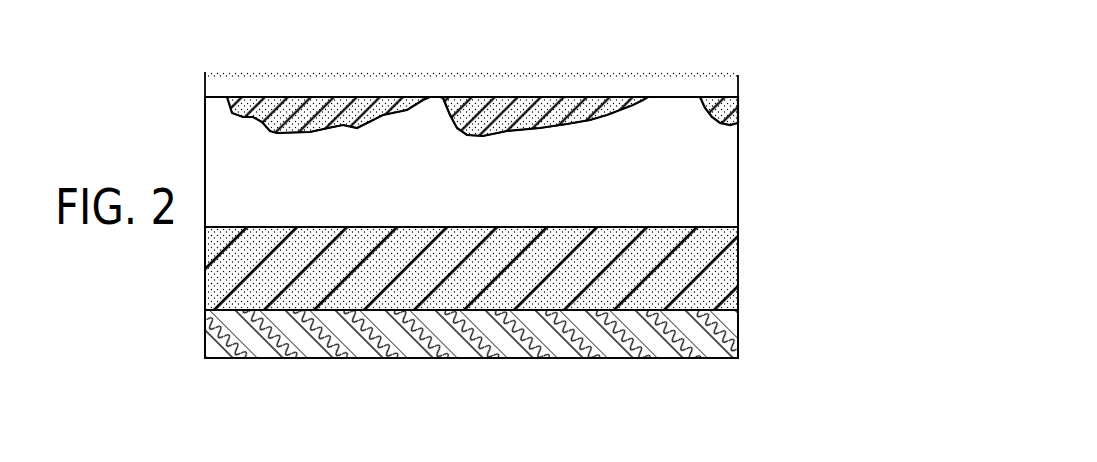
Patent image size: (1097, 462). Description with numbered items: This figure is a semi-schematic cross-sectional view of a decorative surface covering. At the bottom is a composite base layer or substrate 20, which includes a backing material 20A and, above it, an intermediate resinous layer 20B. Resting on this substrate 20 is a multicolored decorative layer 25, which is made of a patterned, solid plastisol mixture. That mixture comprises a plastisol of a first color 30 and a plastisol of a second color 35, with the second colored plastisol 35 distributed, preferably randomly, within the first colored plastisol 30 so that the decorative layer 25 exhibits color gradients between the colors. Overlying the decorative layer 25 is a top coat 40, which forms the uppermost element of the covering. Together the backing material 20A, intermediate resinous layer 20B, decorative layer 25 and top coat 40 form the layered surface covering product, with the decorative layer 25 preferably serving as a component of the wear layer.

The composite base layer or substrate 20 is at (830, 260).
The backing material 20A is at (727, 335).
The intermediate resinous layer 20B is at (738, 263).
The decorative layer 25 is at (747, 100).
The plastisol of a first color 30 is at (665, 125).
The plastisol of a second color 35 is at (362, 97).
The top coat 40 is at (730, 88).